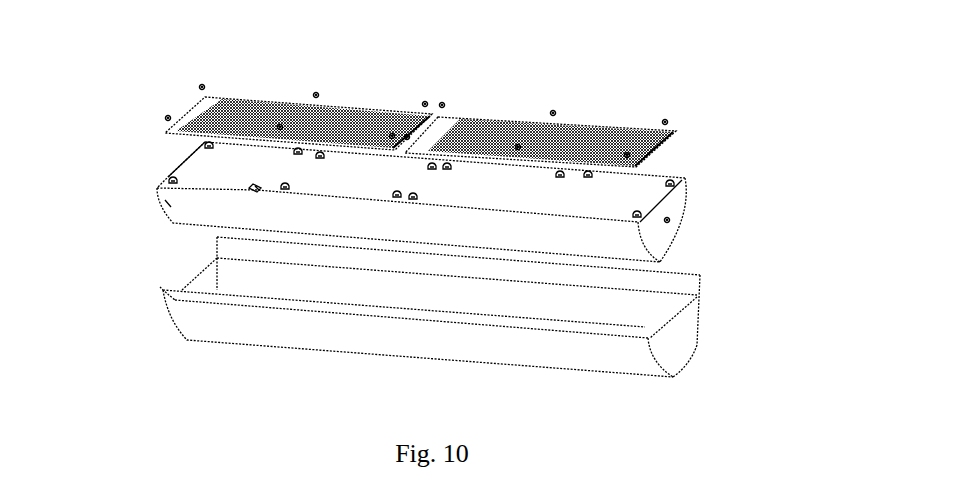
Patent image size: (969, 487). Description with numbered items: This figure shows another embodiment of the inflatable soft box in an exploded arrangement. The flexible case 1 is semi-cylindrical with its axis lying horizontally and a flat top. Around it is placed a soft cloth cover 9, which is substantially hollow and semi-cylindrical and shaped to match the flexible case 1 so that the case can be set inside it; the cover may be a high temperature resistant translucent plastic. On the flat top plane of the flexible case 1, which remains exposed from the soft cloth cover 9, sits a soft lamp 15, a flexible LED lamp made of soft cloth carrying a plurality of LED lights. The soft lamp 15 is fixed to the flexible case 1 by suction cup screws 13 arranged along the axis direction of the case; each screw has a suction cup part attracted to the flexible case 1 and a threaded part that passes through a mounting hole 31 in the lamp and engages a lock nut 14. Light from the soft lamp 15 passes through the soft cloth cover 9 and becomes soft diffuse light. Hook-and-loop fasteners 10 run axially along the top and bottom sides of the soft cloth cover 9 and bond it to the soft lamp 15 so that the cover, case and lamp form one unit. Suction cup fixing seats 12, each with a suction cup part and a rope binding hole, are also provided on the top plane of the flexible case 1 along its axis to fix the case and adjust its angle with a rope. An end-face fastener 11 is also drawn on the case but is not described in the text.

The flexible case 1 is at (158, 191).
The soft cloth cover 9 is at (680, 355).
The hook-and-loop fasteners 10 is at (163, 290).
The end fastener 11 is at (672, 219).
The suction cup fixing seat 12 is at (253, 186).
The suction cup screws 13 is at (676, 180).
The lock nut 14 is at (204, 86).
The soft lamp 15 is at (338, 110).
The mounting holes 31 is at (674, 132).